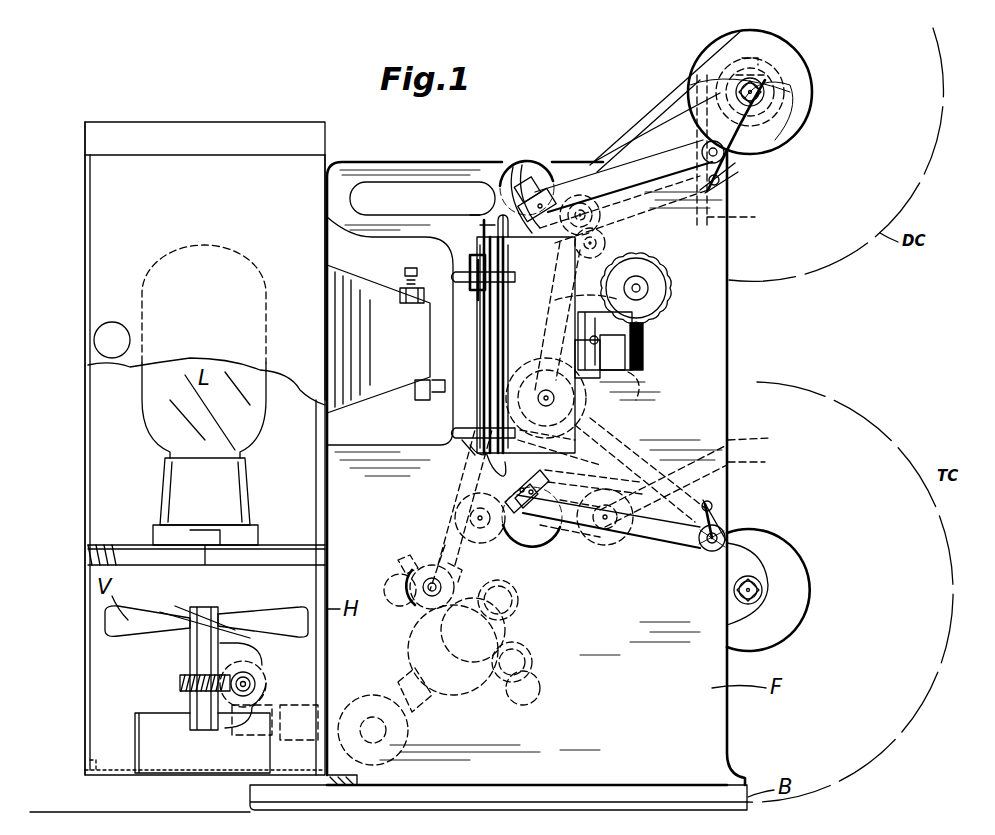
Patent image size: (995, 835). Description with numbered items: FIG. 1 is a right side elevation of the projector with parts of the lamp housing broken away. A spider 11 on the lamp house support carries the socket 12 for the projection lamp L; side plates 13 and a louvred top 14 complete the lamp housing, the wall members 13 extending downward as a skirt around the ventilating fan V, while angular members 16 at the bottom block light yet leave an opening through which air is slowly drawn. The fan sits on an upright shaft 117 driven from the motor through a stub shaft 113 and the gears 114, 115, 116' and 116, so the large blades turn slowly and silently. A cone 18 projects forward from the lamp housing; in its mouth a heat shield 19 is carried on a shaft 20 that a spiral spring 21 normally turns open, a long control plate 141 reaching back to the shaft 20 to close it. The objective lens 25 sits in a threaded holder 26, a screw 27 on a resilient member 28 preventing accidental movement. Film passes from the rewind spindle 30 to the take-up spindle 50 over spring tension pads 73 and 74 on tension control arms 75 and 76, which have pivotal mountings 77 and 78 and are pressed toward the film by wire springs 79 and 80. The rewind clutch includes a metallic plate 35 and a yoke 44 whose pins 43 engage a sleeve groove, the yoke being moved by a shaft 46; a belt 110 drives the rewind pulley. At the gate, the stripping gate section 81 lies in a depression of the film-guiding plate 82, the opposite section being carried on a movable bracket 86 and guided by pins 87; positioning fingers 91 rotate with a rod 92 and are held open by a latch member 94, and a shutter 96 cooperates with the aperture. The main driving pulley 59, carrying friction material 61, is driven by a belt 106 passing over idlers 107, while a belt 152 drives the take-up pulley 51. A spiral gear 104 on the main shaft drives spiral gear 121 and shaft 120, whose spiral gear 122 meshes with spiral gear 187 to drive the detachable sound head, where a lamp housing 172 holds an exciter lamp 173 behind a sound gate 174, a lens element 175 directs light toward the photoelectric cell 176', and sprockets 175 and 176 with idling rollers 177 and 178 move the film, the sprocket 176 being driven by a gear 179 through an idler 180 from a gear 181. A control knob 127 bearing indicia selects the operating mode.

The side plates 13 is at (85, 295).
The louvred top 14 is at (88, 138).
The socket 12 is at (248, 503).
The spider 11 is at (318, 540).
The angular members 16 is at (139, 752).
The upright shaft 117 is at (190, 653).
The gear 116 is at (178, 687).
The gear 116' is at (271, 684).
The gear 115 is at (260, 666).
The gear 114 is at (240, 740).
The stub shaft 113 is at (300, 742).
The cone 18 is at (366, 302).
The shaft 20 is at (412, 268).
The spiral spring 21 is at (406, 290).
The heat shield 19 is at (415, 392).
The control plate 141 is at (435, 404).
The spiral gear 121 is at (457, 425).
The movable bracket 86 is at (470, 325).
The pins 87 is at (480, 266).
The positioning fingers 91 is at (500, 245).
The gate section 81 is at (487, 224).
The shutter 96 is at (501, 222).
The spring tension pad 73 is at (533, 166).
The film-guiding and structure-supporting plate 82 is at (592, 226).
The tension control arm 75 is at (664, 166).
The pivotal mounting 77 is at (725, 156).
The wire spring 79 is at (722, 180).
The belt 110 is at (645, 132).
The yoke 44 is at (735, 62).
The delivery or rewind spindle 30 is at (765, 90).
The pins 43 is at (785, 118).
The shaft 46 is at (742, 151).
The control knob 127 is at (660, 284).
The objective lens 25 is at (643, 356).
The screw threaded holder 26 is at (585, 378).
The resilient member 28 is at (622, 368).
The main driving pulley 59 is at (646, 395).
The screw 27 is at (567, 332).
The metallic plate 35 is at (546, 390).
The spiral gear 104 is at (560, 425).
The spring tension pad 74 is at (556, 540).
The latch member 94 is at (512, 486).
The rod 92 is at (505, 459).
The tension control arm 76 is at (657, 500).
The belt 106 is at (632, 488).
The pivotal mounting 78 is at (724, 535).
The wire spring 80 is at (716, 510).
The friction material 61 is at (700, 468).
The belt 152 is at (704, 489).
The tensioning and directing idlers 107 is at (490, 543).
The shaft 120 is at (445, 516).
The spiral gear 122 is at (400, 562).
The idling roller 177 is at (384, 588).
The spiral gear 187 is at (416, 600).
The sound gate 174 is at (408, 648).
The idler 180 is at (506, 624).
The gear 181 is at (470, 576).
The photoelectric cell 176' is at (523, 600).
The sprocket 176 is at (538, 662).
The gear 179 is at (530, 655).
The idling roller 178 is at (541, 688).
The sprocket 175 is at (455, 575).
The lamp housing 172 is at (408, 736).
The exciter lamp 173 is at (385, 737).
The take-up spindle driving pulley 51 is at (812, 602).
The take-up spindle 50 is at (762, 590).